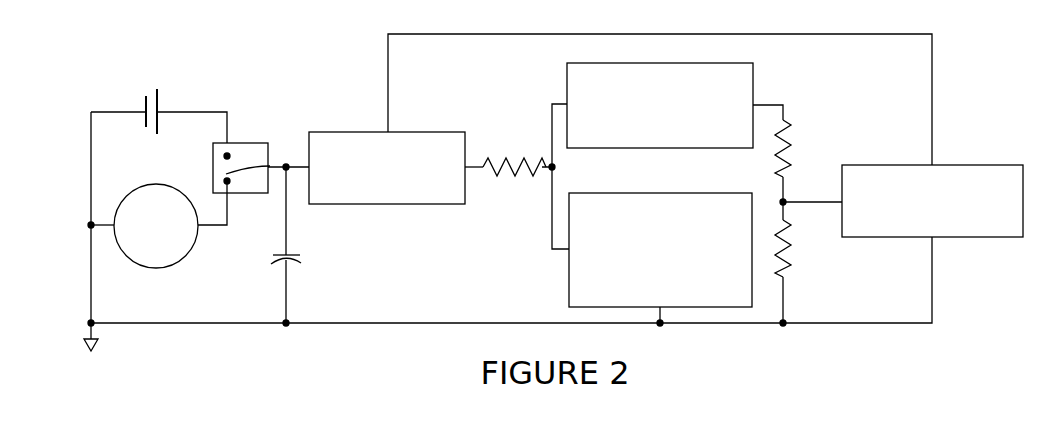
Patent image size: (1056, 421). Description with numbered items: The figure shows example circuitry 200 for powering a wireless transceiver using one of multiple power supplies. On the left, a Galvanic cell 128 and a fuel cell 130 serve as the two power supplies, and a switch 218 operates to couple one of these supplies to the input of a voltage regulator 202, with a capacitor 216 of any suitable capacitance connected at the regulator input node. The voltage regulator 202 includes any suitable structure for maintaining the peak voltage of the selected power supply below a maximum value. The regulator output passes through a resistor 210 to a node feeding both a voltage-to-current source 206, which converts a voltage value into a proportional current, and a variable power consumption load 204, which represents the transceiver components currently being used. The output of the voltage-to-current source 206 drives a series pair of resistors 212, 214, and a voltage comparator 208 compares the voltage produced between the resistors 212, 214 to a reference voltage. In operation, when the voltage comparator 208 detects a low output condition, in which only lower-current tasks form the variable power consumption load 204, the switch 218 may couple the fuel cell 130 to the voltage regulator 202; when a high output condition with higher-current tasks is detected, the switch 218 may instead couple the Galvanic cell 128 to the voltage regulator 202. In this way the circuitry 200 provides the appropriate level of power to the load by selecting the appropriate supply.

The circuitry 200 is at (372, 338).
The Galvanic cell 128 is at (146, 88).
The switch 218 is at (252, 143).
The fuel cell 130 is at (183, 258).
The capacitor 216 is at (303, 262).
The voltage regulator 202 is at (357, 205).
The resistor 210 is at (500, 155).
The voltage-to-current source 206 is at (580, 148).
The variable power consumption load 204 is at (678, 193).
The resistor 212 is at (795, 126).
The resistor 214 is at (797, 260).
The voltage comparator 208 is at (917, 165).